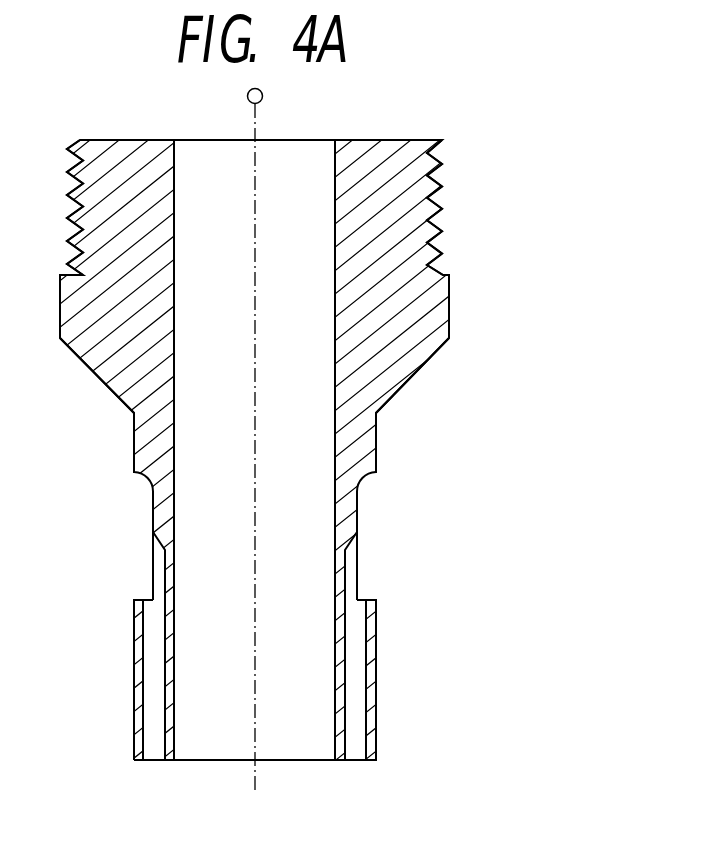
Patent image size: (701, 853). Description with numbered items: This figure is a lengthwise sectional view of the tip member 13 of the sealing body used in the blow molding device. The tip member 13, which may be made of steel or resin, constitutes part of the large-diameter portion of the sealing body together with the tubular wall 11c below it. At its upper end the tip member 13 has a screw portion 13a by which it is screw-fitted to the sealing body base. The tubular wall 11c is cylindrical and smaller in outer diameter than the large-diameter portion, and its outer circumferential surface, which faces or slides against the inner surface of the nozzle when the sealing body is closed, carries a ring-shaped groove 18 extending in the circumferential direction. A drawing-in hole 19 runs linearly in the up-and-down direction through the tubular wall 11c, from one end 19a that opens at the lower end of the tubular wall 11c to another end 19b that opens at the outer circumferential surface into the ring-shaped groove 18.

The tip member 13 is at (484, 299).
The screw portion 13a is at (434, 200).
The ring-shaped groove 18 is at (376, 440).
The drawing-in hole 19 is at (355, 667).
The one end 19a is at (355, 762).
The other end 19b is at (357, 563).
The tubular wall 11c is at (372, 722).